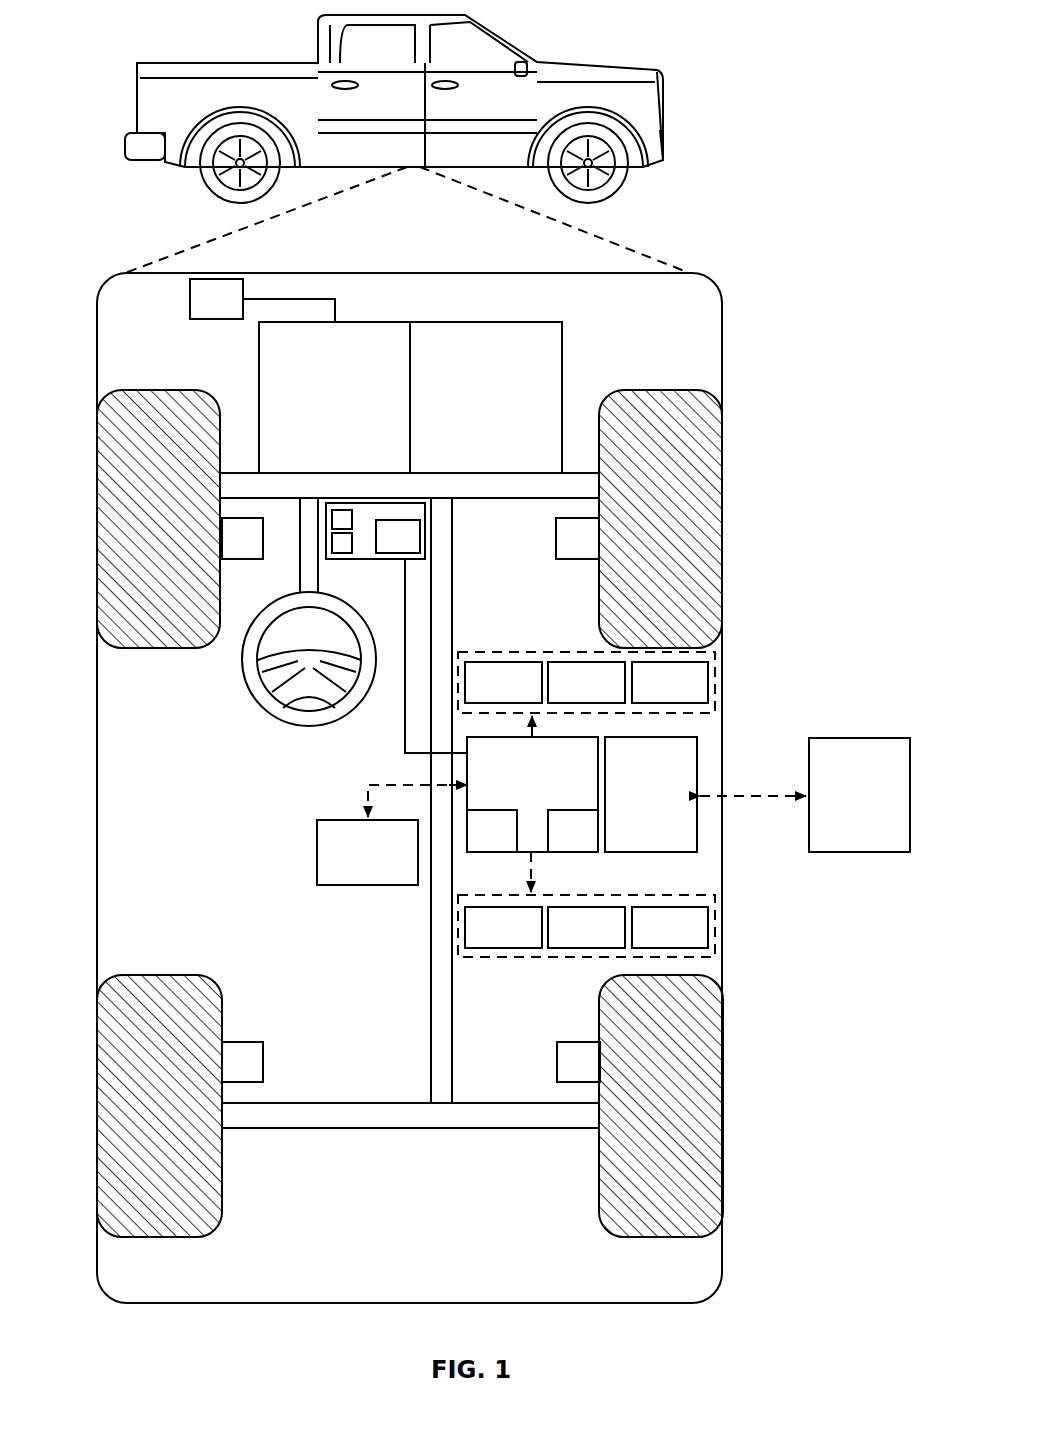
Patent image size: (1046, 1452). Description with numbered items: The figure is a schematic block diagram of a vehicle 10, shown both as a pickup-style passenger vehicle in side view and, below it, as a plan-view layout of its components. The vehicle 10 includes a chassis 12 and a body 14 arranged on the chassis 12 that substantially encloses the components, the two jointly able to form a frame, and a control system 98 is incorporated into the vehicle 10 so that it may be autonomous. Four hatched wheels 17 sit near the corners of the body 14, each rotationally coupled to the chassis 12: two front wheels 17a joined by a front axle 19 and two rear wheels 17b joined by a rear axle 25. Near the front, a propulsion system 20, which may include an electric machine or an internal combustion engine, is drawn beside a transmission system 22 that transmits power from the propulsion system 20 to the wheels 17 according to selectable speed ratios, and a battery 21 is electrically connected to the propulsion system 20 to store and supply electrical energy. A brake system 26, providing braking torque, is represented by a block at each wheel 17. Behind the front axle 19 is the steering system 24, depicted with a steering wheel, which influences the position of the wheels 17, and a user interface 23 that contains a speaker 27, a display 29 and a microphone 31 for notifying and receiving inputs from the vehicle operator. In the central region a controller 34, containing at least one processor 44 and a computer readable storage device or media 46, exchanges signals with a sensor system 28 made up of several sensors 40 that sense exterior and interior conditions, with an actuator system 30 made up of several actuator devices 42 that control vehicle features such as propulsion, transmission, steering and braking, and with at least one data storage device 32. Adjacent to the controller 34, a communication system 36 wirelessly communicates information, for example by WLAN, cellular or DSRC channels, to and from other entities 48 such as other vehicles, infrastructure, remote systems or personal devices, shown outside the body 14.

The vehicle 10 is at (600, 60).
The chassis 12 is at (429, 942).
The body 14 is at (97, 752).
The front and rear wheels 17 is at (158, 390).
The front wheels 17a is at (120, 512).
The rear wheels 17b is at (122, 1100).
The front axle 19 is at (523, 498).
The propulsion system 20 is at (320, 407).
The battery 21 is at (217, 279).
The transmission system 22 is at (471, 407).
The user interface 23 is at (388, 503).
The steering system 24 is at (329, 564).
The rear axle 25 is at (487, 1102).
The brake system 26 is at (228, 552).
The speaker 27 is at (340, 510).
The sensor system 28 is at (547, 652).
The display 29 is at (330, 547).
The actuator system 30 is at (550, 960).
The microphone 31 is at (384, 551).
The data storage device 32 is at (353, 867).
The controller 34 is at (518, 784).
The communication system 36 is at (637, 811).
The sensors 40 is at (489, 696).
The actuator devices 42 is at (489, 941).
The processor 44 is at (478, 847).
The computer readable storage device or media 46 is at (559, 847).
The other entities 48 is at (845, 811).
The control system 98 is at (748, 292).